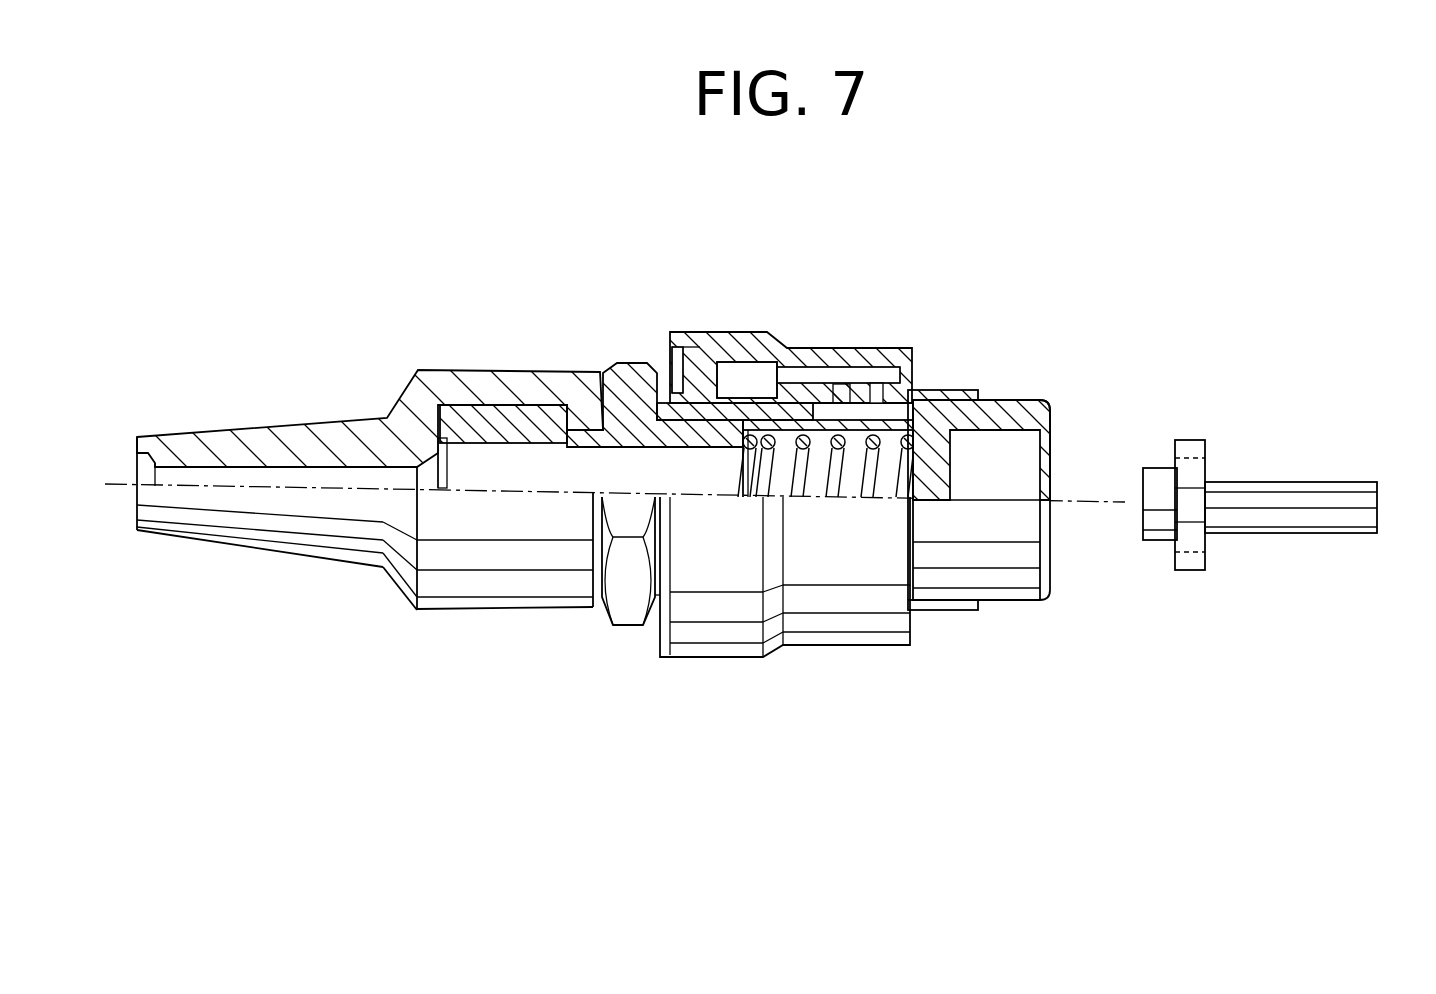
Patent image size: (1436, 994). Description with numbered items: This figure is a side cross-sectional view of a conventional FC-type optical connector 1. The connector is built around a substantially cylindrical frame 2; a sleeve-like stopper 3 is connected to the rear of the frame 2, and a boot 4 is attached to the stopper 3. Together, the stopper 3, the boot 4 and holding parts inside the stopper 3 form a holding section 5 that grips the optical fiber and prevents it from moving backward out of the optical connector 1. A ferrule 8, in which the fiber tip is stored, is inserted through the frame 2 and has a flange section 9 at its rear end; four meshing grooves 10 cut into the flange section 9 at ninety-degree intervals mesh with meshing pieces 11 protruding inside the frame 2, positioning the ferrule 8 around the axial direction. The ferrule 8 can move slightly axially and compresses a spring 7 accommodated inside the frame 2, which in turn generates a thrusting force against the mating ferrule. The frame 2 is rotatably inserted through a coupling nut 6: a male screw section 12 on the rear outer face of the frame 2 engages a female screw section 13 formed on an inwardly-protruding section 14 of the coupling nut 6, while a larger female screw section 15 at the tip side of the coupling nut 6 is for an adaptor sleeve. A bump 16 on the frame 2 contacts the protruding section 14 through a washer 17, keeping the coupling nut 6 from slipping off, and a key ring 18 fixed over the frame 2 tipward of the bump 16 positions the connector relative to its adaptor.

The optical connector 1 is at (1007, 283).
The frame 2 is at (1027, 400).
The stopper 3 is at (622, 365).
The boot 4 is at (477, 368).
The holding section 5 is at (576, 350).
The coupling nut 6 is at (752, 340).
The spring 7 is at (912, 440).
The ferrule 8 is at (1364, 474).
The flange section 9 is at (1188, 455).
The meshing grooves 10 is at (1200, 456).
The meshing pieces 11 is at (887, 400).
The male screw section 12 is at (675, 347).
The female screw section 13 is at (707, 405).
The inwardly-protruding section 14 is at (692, 345).
The female screw section 15 is at (800, 365).
The bump 16 is at (868, 362).
The washer 17 is at (833, 372).
The key ring 18 is at (950, 392).